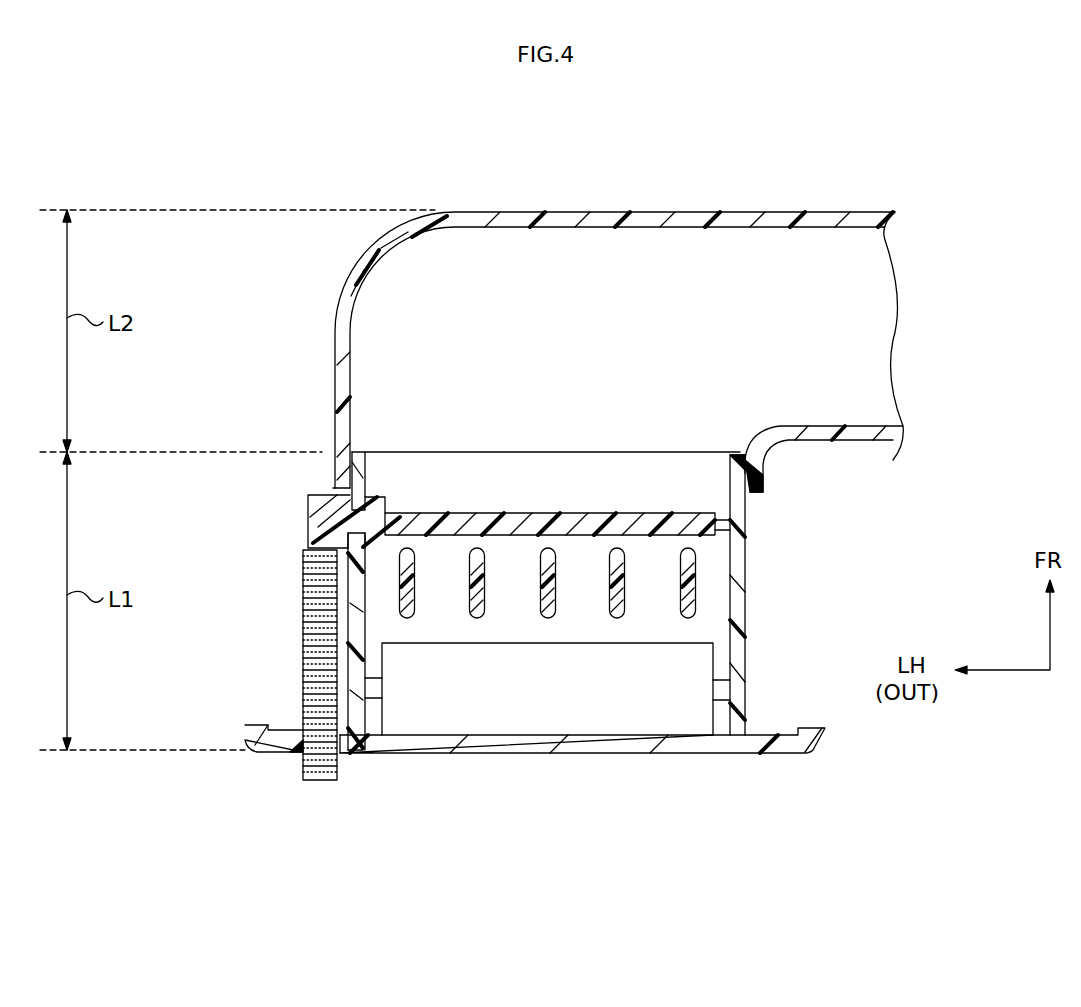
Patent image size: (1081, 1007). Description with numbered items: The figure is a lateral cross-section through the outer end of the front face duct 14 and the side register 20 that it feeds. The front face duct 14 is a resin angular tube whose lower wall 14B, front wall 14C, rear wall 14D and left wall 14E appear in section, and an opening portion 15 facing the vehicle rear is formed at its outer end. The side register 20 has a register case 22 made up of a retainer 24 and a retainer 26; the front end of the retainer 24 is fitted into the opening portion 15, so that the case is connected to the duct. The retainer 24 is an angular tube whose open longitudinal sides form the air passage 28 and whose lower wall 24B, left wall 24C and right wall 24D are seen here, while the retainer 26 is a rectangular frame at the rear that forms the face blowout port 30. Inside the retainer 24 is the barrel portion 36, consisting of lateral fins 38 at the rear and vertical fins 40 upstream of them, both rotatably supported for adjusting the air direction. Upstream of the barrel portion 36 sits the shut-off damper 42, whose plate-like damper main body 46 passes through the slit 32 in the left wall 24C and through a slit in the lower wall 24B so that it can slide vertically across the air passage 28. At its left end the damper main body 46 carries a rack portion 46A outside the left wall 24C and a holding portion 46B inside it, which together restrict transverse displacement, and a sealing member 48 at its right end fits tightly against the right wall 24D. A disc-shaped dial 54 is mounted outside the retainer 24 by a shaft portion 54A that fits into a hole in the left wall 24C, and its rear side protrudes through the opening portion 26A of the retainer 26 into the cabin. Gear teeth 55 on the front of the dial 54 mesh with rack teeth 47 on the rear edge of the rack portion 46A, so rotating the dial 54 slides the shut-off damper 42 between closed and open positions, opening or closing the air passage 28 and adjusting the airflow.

The front face duct 14 is at (720, 212).
The lower wall 14B is at (868, 322).
The front wall 14C is at (611, 212).
The rear wall 14D is at (864, 442).
The left wall 14E is at (335, 372).
The opening portion 15 is at (740, 490).
The side register 20 is at (550, 785).
The register case 22 is at (655, 430).
The retainer 24 is at (750, 658).
The lower wall 24B is at (556, 450).
The left wall 24C is at (362, 752).
The right wall 24D is at (752, 563).
The retainer 26 is at (760, 758).
The opening portion 26A is at (305, 756).
The air passage 28 is at (594, 619).
The face blowout port 30 is at (725, 760).
The slit 32 is at (316, 497).
The barrel portion 36 is at (748, 622).
The lateral fins 38 is at (486, 717).
The vertical fins 40 is at (478, 570).
The shut-off damper 42 is at (488, 510).
The damper main body 46 is at (612, 510).
The rack portion 46A is at (348, 540).
The holding portion 46B is at (388, 500).
The rack teeth 47 is at (318, 555).
The sealing member 48 is at (745, 485).
The dial 54 is at (300, 668).
The shaft portion 54A is at (340, 690).
The gear teeth 55 is at (318, 620).